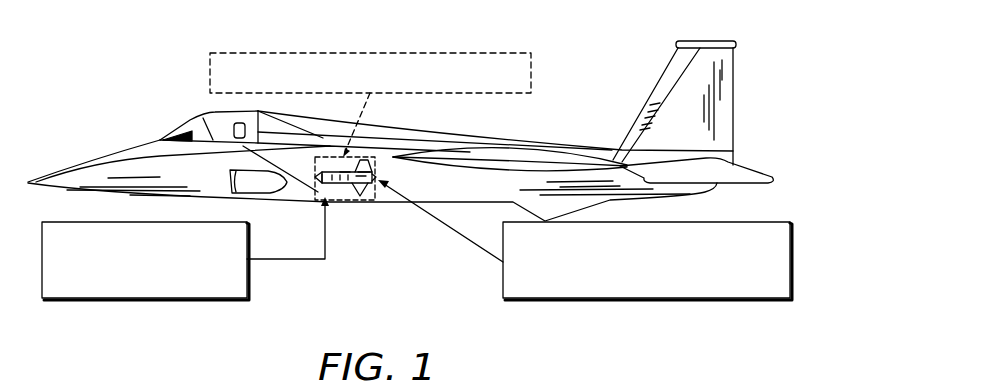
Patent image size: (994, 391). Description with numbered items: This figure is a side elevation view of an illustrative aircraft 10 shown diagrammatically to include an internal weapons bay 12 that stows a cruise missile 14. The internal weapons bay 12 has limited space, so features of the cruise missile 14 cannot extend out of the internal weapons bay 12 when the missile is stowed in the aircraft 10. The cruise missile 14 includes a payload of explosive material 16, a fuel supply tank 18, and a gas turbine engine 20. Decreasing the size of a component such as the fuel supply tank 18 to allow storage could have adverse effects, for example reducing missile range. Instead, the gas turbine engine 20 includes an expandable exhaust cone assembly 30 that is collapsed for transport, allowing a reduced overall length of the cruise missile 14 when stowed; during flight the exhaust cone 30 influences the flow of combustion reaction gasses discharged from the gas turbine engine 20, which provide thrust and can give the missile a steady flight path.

The aircraft 10 is at (577, 89).
The internal weapons bay 12 is at (210, 80).
The cruise missile 14 is at (92, 299).
The payload of explosive material 16 is at (335, 184).
The fuel supply tank 18 is at (345, 184).
The gas turbine engine 20 is at (363, 184).
The expandable exhaust cone assembly 30 is at (745, 299).